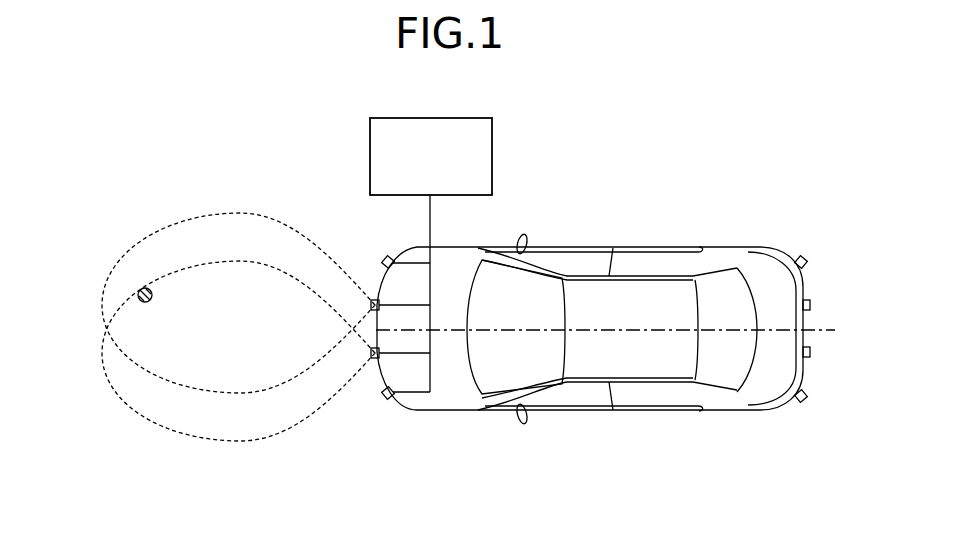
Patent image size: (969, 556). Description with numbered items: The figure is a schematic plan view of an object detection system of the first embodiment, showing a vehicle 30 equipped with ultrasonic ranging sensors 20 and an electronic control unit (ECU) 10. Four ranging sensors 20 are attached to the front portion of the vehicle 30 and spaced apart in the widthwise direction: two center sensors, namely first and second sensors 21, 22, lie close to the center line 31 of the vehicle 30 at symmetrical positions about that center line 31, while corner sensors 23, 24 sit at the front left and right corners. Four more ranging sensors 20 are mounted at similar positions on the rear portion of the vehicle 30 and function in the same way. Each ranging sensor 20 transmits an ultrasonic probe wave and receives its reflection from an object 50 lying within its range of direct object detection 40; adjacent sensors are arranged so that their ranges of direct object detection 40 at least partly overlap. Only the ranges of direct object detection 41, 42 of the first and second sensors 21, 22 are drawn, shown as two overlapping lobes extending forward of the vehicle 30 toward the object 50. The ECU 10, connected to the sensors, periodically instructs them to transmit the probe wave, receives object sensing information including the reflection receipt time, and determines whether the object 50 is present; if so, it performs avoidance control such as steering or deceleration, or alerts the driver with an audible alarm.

The electronic control unit (ECU) 10 is at (456, 118).
The ranging sensor 20 is at (585, 314).
The first sensor 21 is at (374, 298).
The second sensor 22 is at (373, 360).
The corner sensor 23 is at (388, 256).
The corner sensor 24 is at (388, 400).
The vehicle 30 is at (638, 247).
The center line 31 is at (620, 333).
The range of direct object detection 40 is at (238, 332).
The range of direct object detection 41 is at (142, 232).
The range of direct object detection 42 is at (142, 424).
The object 50 is at (143, 291).